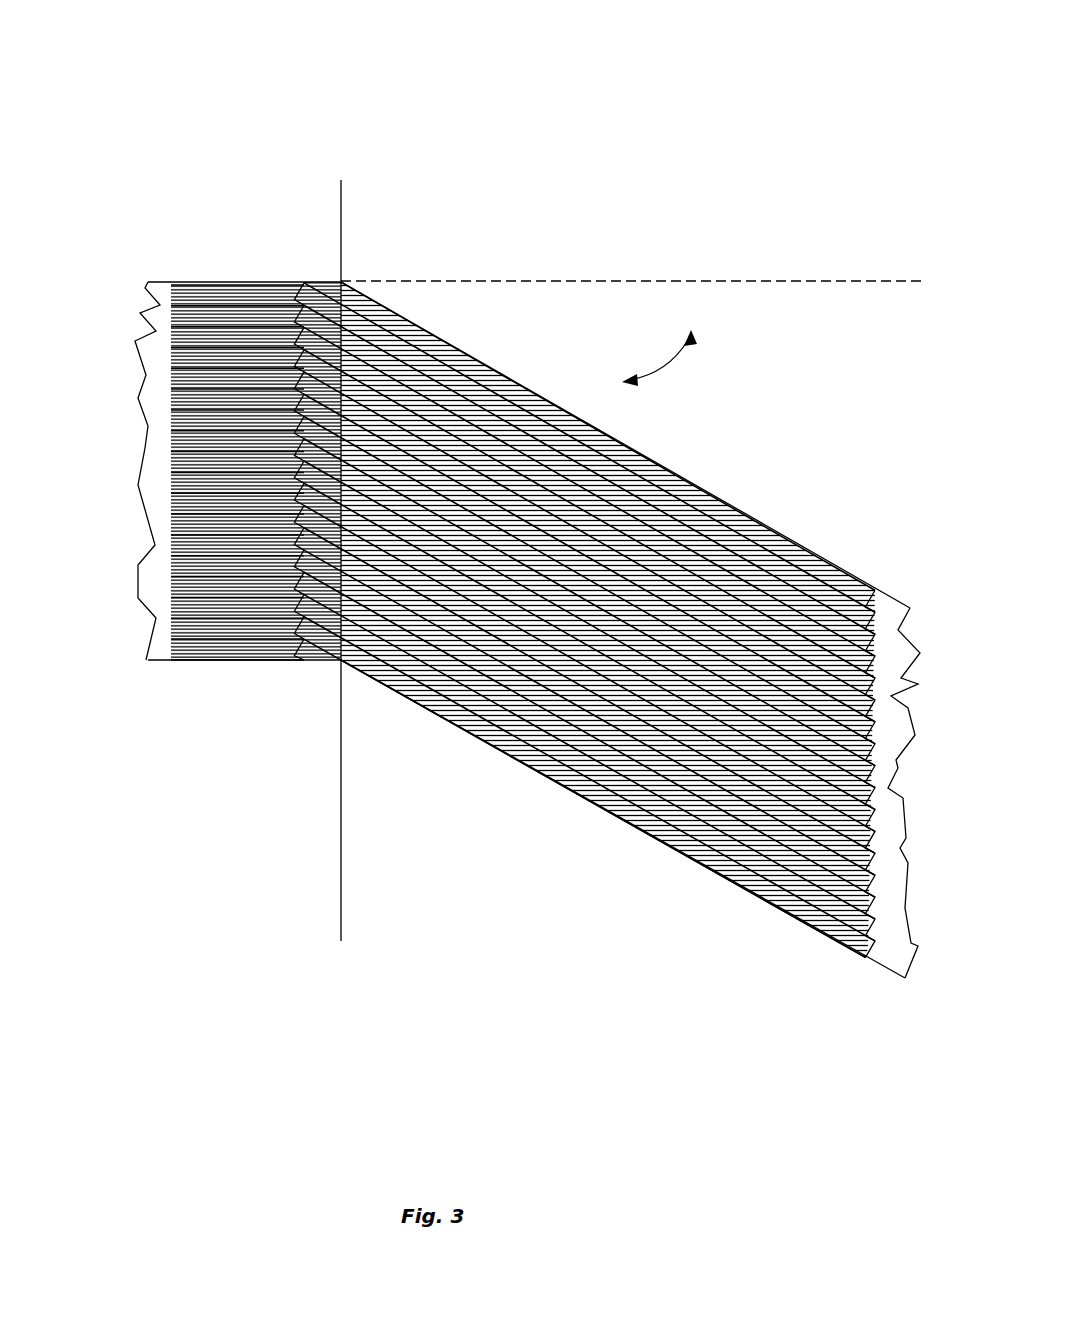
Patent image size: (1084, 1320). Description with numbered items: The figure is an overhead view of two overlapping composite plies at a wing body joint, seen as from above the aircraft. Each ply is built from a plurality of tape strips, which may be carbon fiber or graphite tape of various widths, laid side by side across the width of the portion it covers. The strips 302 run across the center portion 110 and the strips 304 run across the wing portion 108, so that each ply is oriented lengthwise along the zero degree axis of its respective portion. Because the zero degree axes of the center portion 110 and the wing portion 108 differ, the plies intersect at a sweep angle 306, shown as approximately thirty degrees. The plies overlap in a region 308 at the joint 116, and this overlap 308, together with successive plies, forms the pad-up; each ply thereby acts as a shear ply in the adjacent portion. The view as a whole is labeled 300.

The arrangement of layered stacks 300 is at (214, 65).
The strips 302 is at (205, 632).
The overlap region 308 is at (355, 338).
The strips 304 is at (653, 812).
The sweep angle 306 is at (650, 342).
The joint 116 is at (310, 806).
The center portion 110 is at (105, 903).
The wing portion 108 is at (548, 906).